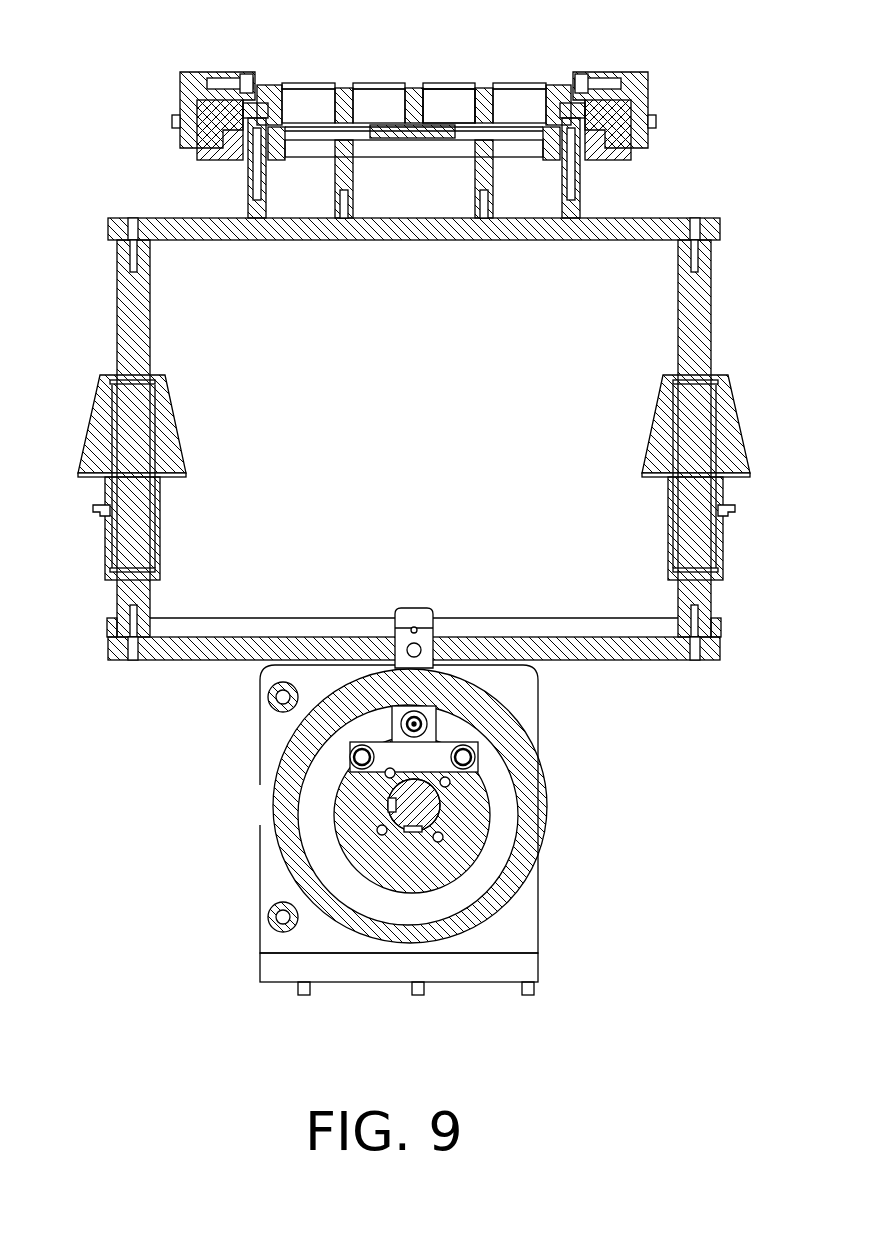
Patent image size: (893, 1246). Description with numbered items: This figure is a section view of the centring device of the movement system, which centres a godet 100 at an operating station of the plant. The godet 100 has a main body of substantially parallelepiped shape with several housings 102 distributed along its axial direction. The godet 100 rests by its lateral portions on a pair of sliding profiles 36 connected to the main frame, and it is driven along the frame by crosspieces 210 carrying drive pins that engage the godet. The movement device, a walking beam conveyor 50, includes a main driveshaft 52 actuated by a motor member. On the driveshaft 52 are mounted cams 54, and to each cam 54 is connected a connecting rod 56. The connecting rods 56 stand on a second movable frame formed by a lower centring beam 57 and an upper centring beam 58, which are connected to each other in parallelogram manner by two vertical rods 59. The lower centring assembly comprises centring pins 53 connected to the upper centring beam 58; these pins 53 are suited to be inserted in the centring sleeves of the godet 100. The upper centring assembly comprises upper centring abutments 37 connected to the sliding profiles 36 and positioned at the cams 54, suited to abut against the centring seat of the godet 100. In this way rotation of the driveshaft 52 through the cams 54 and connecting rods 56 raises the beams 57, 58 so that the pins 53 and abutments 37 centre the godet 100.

The sliding profiles 36 is at (205, 162).
The upper centring abutments 37 is at (208, 80).
The walking beam conveyor 50 is at (213, 716).
The main driveshaft 52 is at (417, 805).
The centring pins 53 is at (255, 180).
The cams 54 is at (530, 758).
The connecting rod 56 is at (432, 665).
The lower centring beam 57 is at (652, 648).
The upper centring beam 58 is at (120, 233).
The vertical rods 59 is at (130, 340).
The godet 100 is at (348, 108).
The housings 102 is at (445, 105).
The crosspieces 210 is at (550, 160).